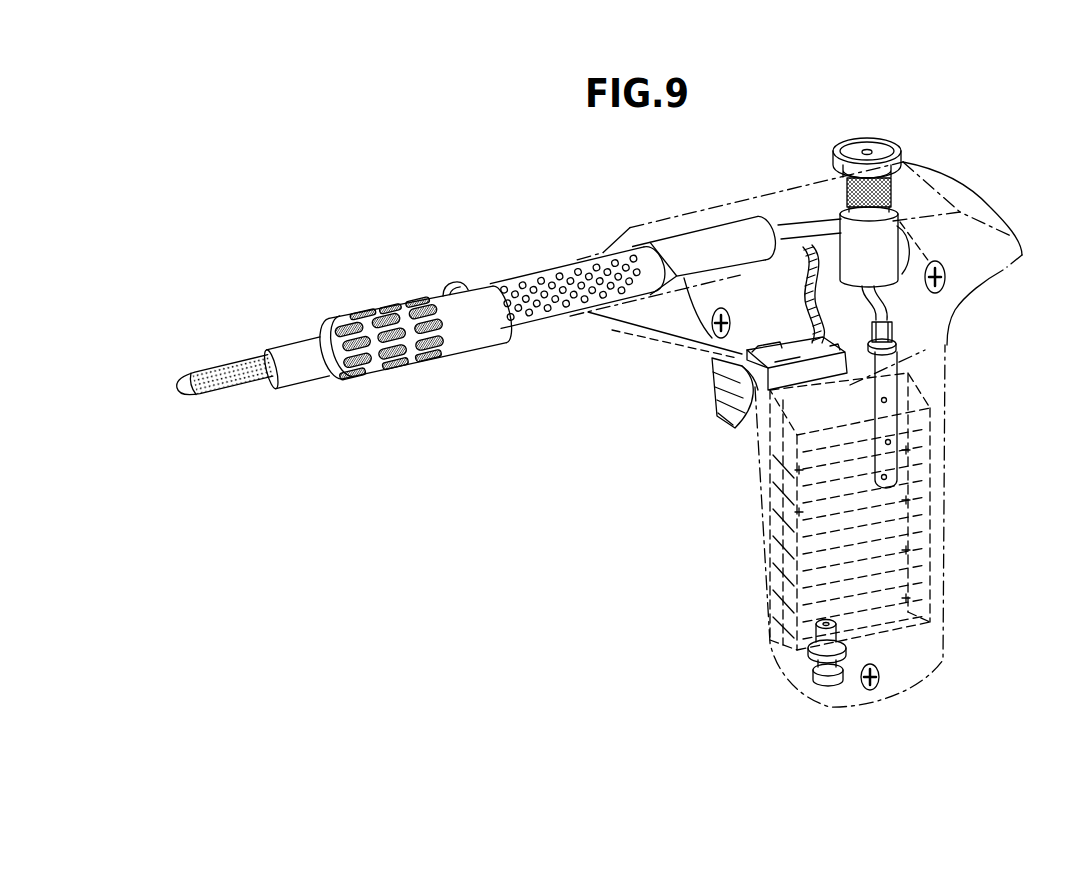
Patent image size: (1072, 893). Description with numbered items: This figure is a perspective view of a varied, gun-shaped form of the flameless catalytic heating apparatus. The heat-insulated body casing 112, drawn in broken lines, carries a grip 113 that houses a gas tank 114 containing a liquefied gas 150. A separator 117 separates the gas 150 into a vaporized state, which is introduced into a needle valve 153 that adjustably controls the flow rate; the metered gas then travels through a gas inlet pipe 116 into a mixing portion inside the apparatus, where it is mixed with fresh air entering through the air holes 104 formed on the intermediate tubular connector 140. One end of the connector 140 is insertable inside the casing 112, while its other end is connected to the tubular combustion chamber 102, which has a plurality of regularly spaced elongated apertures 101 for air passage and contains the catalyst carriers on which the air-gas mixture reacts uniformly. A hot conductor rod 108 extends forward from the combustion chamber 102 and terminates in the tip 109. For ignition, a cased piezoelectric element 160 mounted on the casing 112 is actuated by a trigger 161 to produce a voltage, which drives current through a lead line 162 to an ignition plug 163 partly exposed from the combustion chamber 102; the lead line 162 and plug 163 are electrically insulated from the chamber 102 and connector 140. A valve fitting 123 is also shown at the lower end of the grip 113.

The elongated apertures 101 is at (391, 362).
The tubular combustion chamber 102 is at (363, 310).
The air holes 104 is at (549, 320).
The hot conductor rod 108 is at (236, 357).
The soldering tip 109 is at (192, 393).
The heat-insulated body casing 112 is at (675, 217).
The grip 113 is at (767, 603).
The gas tank 114 is at (767, 472).
The gas inlet pipe 116 is at (808, 230).
The separator 117 is at (897, 430).
The valve 123 is at (823, 643).
The intermediate tubular connector 140 is at (525, 322).
The liquefied gas 150 is at (872, 523).
The needle valve 153 is at (887, 138).
The cased piezoelectric element 160 is at (788, 380).
The trigger 161 is at (713, 398).
The lead line 162 is at (815, 297).
The ignition plug 163 is at (450, 284).